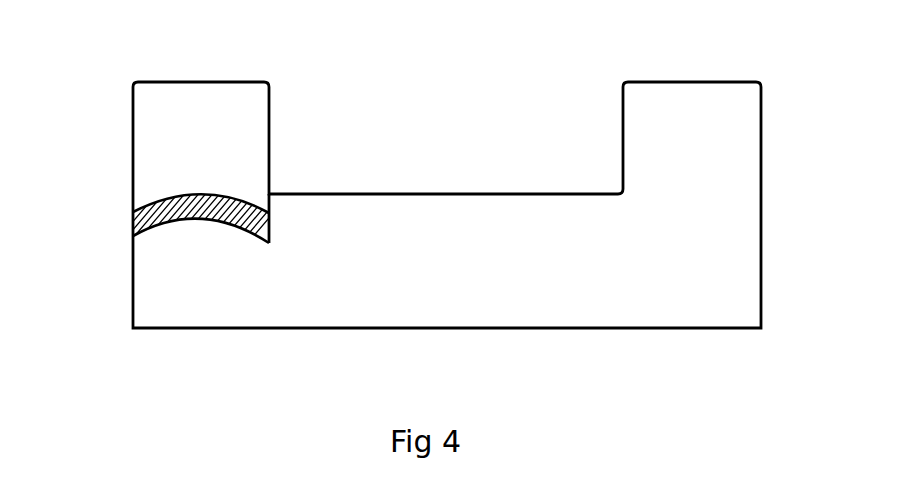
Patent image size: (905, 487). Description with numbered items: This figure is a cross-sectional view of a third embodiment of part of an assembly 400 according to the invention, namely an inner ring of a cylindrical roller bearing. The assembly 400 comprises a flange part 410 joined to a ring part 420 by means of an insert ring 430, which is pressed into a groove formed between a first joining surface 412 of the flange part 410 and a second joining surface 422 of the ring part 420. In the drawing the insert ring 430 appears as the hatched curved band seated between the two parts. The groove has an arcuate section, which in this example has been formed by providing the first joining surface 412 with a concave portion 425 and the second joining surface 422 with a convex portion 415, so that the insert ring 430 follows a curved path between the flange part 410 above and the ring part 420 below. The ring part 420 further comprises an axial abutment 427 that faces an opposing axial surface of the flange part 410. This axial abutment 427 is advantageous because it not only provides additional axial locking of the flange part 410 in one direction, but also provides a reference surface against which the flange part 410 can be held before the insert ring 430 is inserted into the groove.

The assembly 400 is at (439, 182).
The flange part 410 is at (183, 107).
The ring part 420 is at (698, 255).
The insert ring 430 is at (232, 191).
The concave portion 425 is at (200, 187).
The convex portion 415 is at (202, 228).
The first joining surface 412 is at (240, 188).
The second joining surface 422 is at (233, 228).
The axial abutment 427 is at (273, 207).